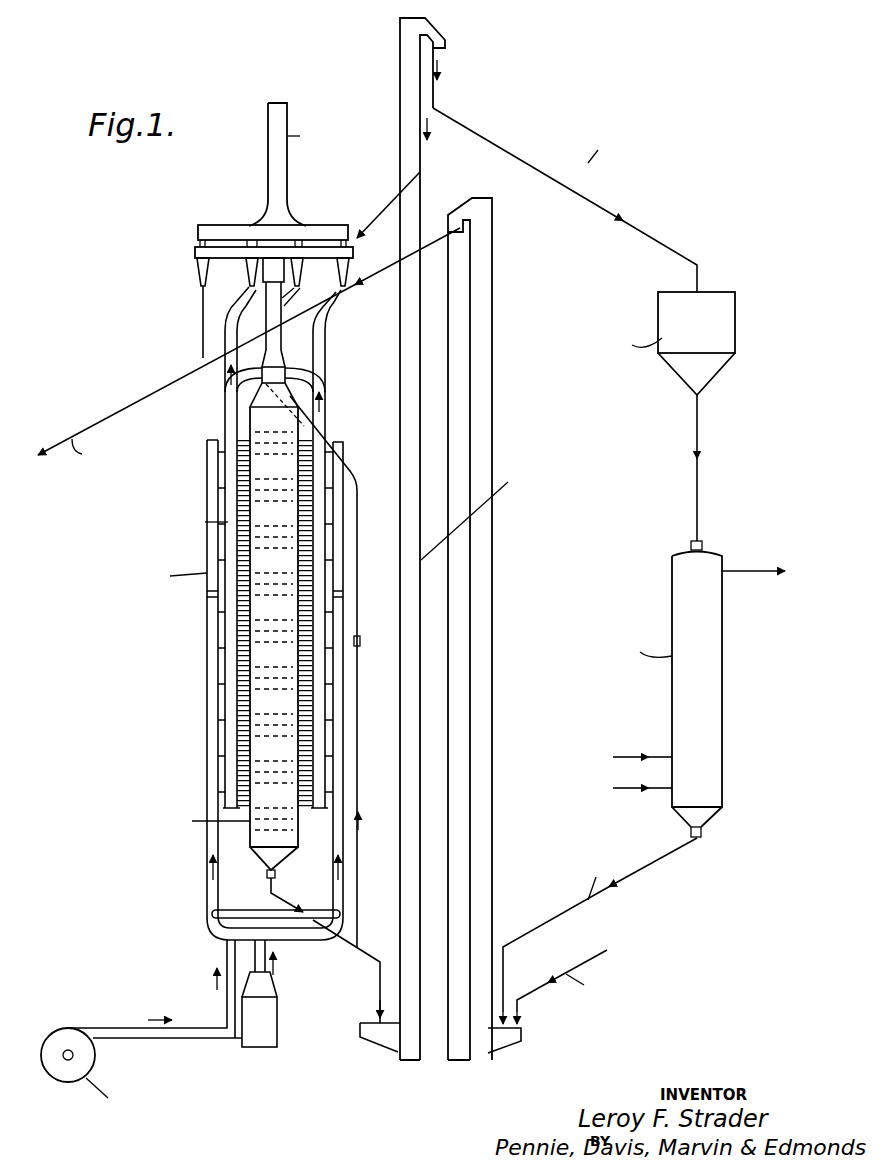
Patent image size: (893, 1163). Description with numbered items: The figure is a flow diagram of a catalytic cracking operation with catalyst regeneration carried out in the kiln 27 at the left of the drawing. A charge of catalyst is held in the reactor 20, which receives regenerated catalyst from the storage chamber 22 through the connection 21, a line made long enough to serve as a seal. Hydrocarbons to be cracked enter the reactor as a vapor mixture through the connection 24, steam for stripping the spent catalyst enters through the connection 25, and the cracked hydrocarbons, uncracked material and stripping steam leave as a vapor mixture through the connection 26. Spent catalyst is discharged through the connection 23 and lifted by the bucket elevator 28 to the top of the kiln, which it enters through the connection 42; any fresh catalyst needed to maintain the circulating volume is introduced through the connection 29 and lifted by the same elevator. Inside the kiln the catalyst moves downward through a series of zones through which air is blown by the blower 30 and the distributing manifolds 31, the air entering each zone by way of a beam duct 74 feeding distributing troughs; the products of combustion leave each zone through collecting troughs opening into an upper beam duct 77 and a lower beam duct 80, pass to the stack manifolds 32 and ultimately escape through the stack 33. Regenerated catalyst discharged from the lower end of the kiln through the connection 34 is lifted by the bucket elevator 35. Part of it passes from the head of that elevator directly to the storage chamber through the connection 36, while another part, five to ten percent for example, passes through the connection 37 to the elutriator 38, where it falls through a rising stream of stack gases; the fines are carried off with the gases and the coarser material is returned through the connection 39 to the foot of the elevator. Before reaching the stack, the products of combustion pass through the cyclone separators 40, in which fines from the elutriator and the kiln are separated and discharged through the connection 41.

The reactor 20 is at (722, 696).
The connection 21 is at (699, 496).
The storage chamber 22 is at (736, 333).
The connection 23 is at (651, 869).
The connection 24 is at (655, 753).
The connection 25 is at (655, 787).
The connection 26 is at (726, 568).
The kiln 27 is at (292, 832).
The bucket elevator 28 is at (492, 600).
The connection 29 is at (596, 955).
The blower 30 is at (60, 1027).
The distributing ducts or manifolds 31 is at (345, 438).
The ducts or manifolds 32 is at (225, 405).
The stack 33 is at (267, 153).
The connection 34 is at (378, 979).
The bucket elevator 35 is at (399, 74).
The connection 36 is at (581, 197).
The connection 37 is at (392, 210).
The elutriator 38 is at (275, 341).
The connection 39 is at (359, 604).
The cyclone separators 40 is at (357, 273).
The connection 41 is at (127, 406).
The connection 42 is at (332, 340).
The beam duct 74 is at (226, 455).
The beam duct 77 is at (246, 440).
The beam duct 80 is at (245, 470).